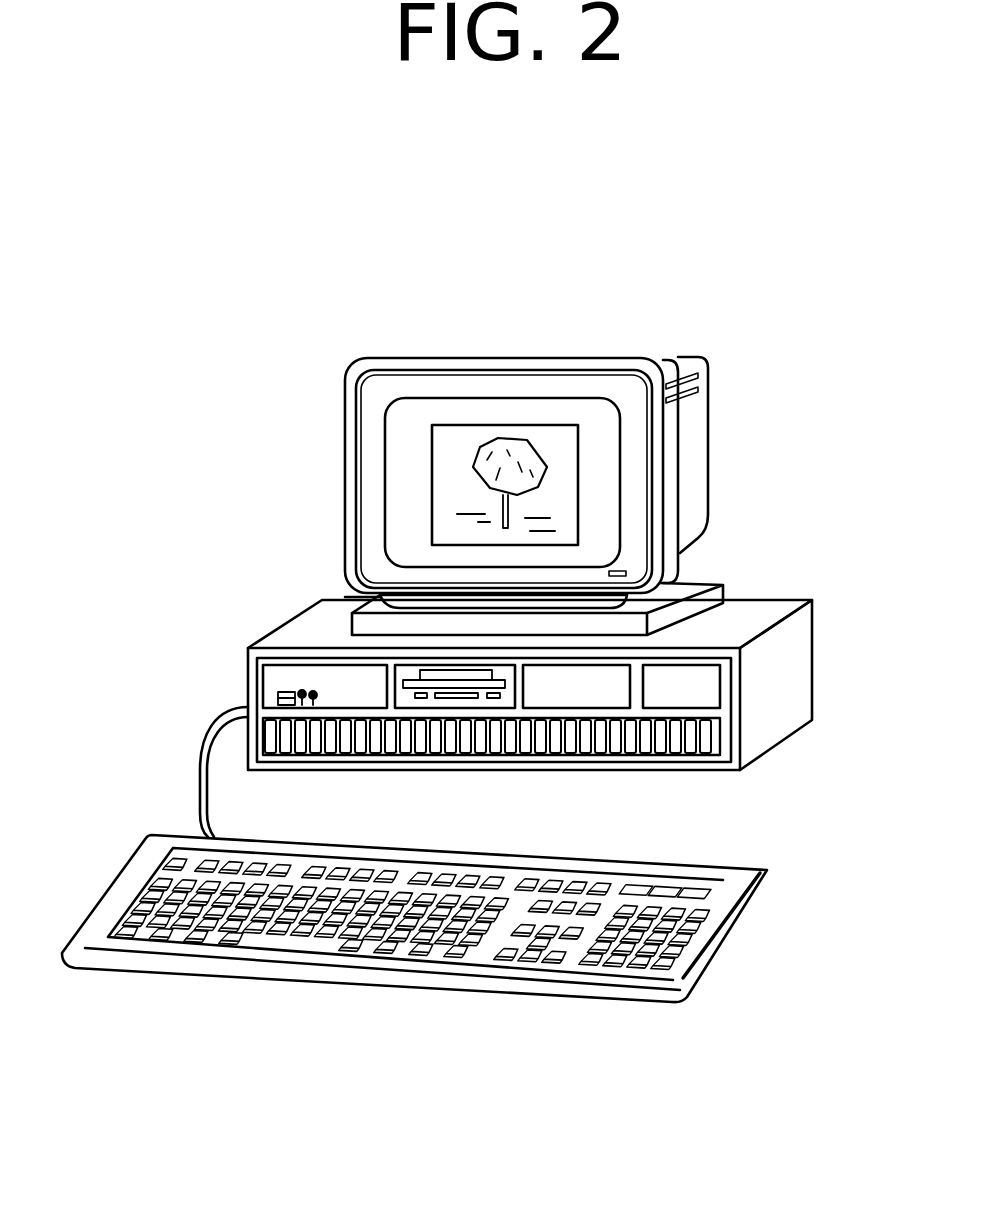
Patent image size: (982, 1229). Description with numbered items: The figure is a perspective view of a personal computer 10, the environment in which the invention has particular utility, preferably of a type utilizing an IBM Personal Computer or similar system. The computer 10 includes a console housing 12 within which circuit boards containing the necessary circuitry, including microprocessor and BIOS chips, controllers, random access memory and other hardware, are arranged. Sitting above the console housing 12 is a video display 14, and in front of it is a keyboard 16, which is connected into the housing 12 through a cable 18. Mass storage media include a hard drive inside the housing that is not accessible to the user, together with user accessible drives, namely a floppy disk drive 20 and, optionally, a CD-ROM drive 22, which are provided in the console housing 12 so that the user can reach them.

The personal computer 10 is at (256, 535).
The console housing 12 is at (723, 690).
The video display 14 is at (693, 508).
The keyboard 16 is at (577, 963).
The cable 18 is at (197, 790).
The floppy disk drive 20 is at (790, 725).
The CD-ROM drive 22 is at (740, 768).